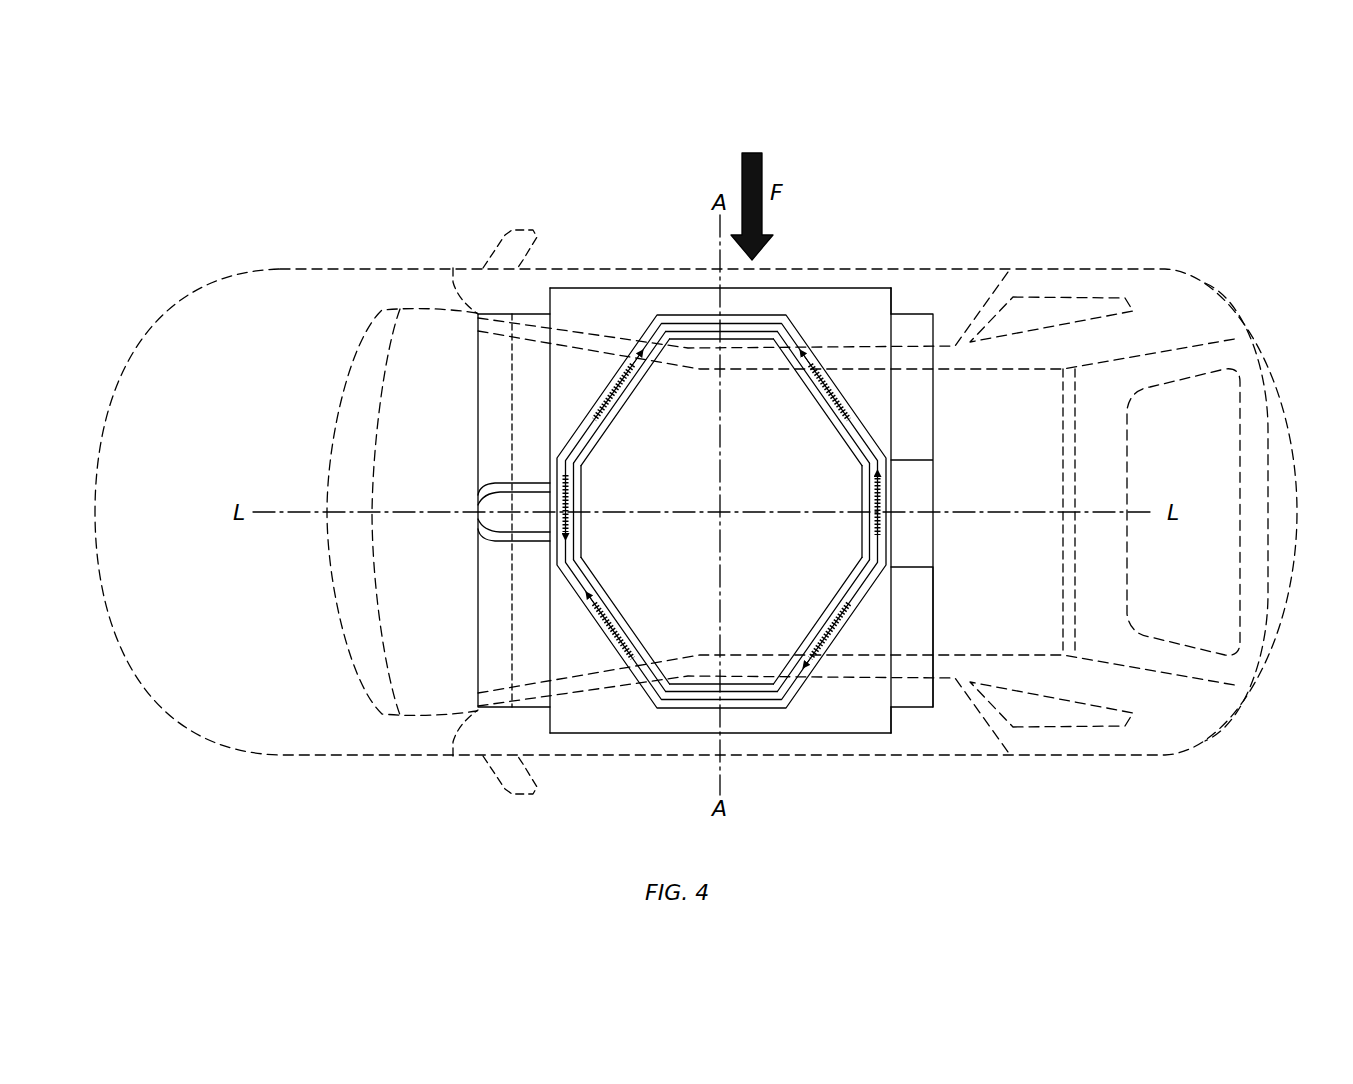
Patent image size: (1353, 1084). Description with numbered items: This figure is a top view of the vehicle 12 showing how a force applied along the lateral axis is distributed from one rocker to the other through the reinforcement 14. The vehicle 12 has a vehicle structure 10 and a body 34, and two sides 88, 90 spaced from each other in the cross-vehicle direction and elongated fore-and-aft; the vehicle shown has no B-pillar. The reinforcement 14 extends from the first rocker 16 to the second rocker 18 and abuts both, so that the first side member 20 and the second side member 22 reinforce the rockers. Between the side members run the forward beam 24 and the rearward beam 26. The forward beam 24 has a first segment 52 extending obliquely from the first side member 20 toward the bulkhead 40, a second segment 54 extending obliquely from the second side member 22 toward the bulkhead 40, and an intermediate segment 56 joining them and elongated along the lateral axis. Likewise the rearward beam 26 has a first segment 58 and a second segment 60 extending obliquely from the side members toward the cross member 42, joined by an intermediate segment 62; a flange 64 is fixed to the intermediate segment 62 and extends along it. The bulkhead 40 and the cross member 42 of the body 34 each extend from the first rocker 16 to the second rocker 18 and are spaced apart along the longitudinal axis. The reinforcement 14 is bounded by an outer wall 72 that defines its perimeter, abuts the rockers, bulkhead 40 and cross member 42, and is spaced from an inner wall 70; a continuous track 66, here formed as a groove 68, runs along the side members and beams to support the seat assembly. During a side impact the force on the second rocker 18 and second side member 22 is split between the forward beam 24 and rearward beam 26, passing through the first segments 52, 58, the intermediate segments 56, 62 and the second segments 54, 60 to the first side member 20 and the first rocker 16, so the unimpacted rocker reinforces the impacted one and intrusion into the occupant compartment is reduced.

The vehicle structure 10 is at (290, 265).
The vehicle 12 is at (1130, 190).
The reinforcement 14 is at (847, 660).
The first rocker 16 is at (578, 733).
The second rocker 18 is at (577, 288).
The first side member 20 is at (735, 683).
The second side member 22 is at (738, 340).
The forward beam 24 is at (592, 524).
The rearward beam 26 is at (850, 522).
The body 34 is at (332, 265).
The bulkhead 40 is at (478, 424).
The cross member 42 is at (933, 440).
The first segment of the forward beam 52 is at (625, 625).
The second segment of the forward beam 54 is at (625, 400).
The intermediate segment of the forward beam 56 is at (590, 490).
The first segment of the rearward beam 58 is at (830, 605).
The second segment of the rearward beam 60 is at (812, 405).
The intermediate segment of the rearward beam 62 is at (865, 500).
The flange 64 is at (907, 567).
The track 66 is at (655, 340).
The groove 68 is at (790, 345).
The inner wall 70 is at (655, 648).
The outer wall 72 is at (595, 623).
The first side of the vehicle 88 is at (890, 750).
The second side of the vehicle 90 is at (895, 270).